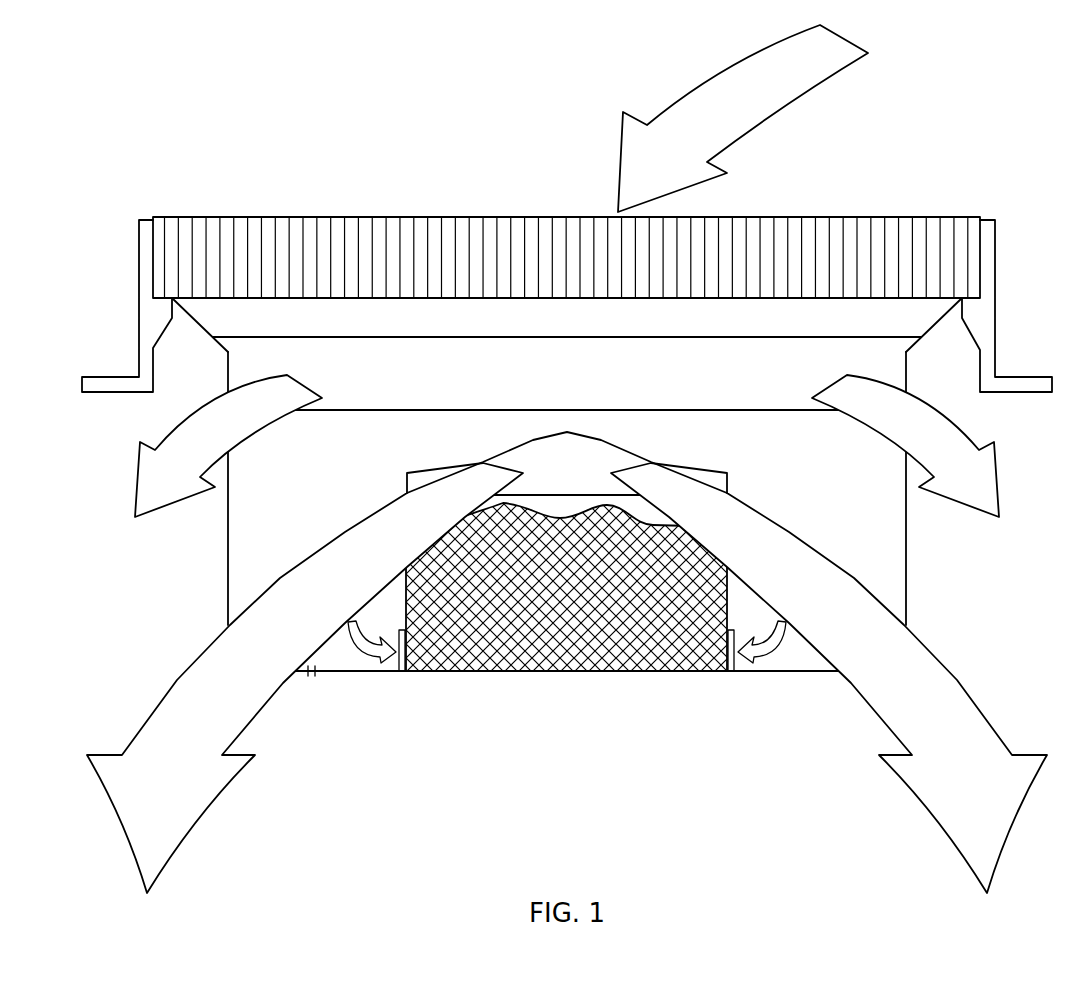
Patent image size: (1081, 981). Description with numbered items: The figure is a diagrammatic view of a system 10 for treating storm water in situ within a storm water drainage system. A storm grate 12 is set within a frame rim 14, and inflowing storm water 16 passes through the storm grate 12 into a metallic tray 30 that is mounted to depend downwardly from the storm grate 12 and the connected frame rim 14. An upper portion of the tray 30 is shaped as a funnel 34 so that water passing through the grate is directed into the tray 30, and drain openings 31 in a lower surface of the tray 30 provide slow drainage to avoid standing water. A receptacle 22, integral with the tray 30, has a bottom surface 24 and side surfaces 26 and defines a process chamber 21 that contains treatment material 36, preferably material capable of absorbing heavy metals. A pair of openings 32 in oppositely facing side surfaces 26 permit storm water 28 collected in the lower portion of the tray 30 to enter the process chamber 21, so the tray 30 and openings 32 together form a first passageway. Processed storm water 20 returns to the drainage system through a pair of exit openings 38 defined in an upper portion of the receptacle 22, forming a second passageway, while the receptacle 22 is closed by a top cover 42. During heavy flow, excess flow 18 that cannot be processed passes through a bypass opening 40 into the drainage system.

The system 10 is at (938, 157).
The storm grate 12 is at (843, 218).
The frame rim 14 is at (995, 332).
The inflowing storm water 16 is at (708, 82).
The excess flow 18 is at (987, 487).
The processed storm water 20 is at (952, 695).
The process chamber 21 is at (567, 663).
The receptacle 22 is at (398, 597).
The bottom surface 24 is at (512, 672).
The side surfaces 26 is at (730, 601).
The collected storm water 28 is at (360, 671).
The tray 30 is at (228, 568).
The drain openings 31 is at (313, 676).
The openings 32 is at (392, 673).
The funnel 34 is at (928, 327).
The treatment material 36 is at (635, 663).
The exit openings 38 is at (532, 448).
The bypass opening 40 is at (648, 410).
The top cover 42 is at (463, 460).